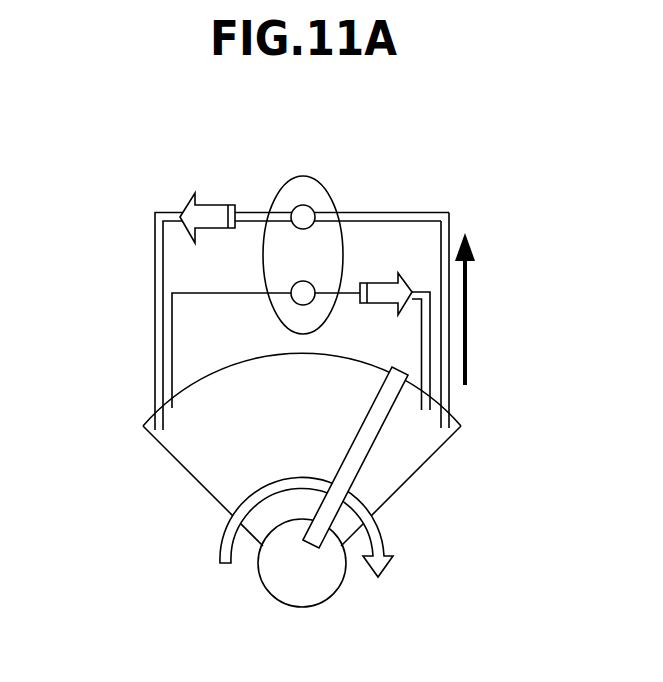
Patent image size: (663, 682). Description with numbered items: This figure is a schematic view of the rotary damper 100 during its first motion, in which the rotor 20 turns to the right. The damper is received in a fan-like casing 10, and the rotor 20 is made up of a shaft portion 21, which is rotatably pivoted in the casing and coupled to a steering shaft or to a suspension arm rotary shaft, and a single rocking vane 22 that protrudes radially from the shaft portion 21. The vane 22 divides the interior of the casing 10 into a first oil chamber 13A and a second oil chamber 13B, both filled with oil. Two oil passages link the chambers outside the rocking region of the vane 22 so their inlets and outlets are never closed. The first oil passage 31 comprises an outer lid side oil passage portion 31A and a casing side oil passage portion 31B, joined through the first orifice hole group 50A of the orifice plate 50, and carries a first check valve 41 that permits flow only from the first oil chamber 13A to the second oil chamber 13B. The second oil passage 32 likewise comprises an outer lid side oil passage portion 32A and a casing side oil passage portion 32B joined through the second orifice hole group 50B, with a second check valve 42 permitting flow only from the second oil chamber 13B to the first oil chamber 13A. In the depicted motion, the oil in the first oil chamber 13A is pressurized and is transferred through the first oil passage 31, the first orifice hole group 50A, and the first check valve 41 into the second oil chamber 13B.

The rotary damper 100 is at (148, 233).
The casing 10 is at (183, 470).
The first oil chamber 13A is at (412, 455).
The second oil chamber 13B is at (190, 437).
The rotor 20 is at (256, 576).
The shaft portion 21 is at (300, 592).
The rocking vane 22 is at (358, 448).
The first oil passage 31 is at (386, 210).
The outer lid side oil passage portion 31A is at (426, 210).
The casing side oil passage portion 31B is at (257, 210).
The second oil passage 32 is at (240, 288).
The outer lid side oil passage portion 32A is at (208, 296).
The casing side oil passage portion 32B is at (420, 340).
The first check valve 41 is at (180, 213).
The second check valve 42 is at (381, 278).
The orifice plate 50 is at (323, 175).
The first orifice hole group 50A is at (300, 206).
The second orifice hole group 50B is at (298, 305).